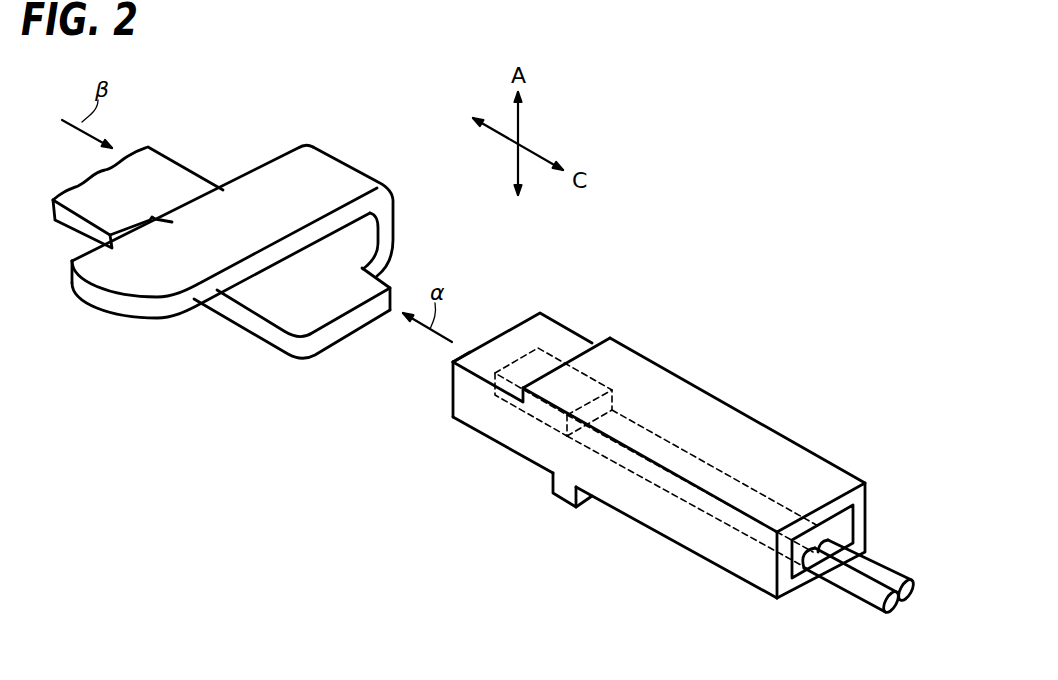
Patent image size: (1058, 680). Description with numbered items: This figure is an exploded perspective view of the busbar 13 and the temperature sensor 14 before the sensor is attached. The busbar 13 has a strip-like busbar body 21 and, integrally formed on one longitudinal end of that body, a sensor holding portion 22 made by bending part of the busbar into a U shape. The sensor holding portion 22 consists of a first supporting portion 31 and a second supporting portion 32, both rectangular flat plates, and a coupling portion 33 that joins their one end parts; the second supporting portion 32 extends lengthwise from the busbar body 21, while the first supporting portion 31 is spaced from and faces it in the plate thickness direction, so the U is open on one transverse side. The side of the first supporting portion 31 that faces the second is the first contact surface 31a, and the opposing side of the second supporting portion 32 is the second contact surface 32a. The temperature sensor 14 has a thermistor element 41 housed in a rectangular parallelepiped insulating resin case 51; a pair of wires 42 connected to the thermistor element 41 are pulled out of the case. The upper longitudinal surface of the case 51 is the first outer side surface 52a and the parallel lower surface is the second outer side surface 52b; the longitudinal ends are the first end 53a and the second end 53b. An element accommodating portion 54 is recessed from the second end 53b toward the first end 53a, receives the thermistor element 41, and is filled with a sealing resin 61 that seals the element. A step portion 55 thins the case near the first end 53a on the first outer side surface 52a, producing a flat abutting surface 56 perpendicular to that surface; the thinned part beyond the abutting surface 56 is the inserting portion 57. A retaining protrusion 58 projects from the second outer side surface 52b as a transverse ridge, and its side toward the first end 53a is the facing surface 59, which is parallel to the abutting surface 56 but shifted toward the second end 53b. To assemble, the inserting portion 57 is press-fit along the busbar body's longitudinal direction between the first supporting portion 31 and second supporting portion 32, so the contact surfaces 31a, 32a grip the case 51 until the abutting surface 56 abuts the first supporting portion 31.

The busbar 13 is at (66, 234).
The temperature sensor 14 is at (650, 460).
The busbar body 21 is at (162, 168).
The sensor holding portion 22 is at (244, 250).
The first supporting portion 31 is at (224, 218).
The first contact surface 31a is at (290, 258).
The second supporting portion 32 is at (276, 330).
The second contact surface 32a is at (243, 297).
The coupling portion 33 is at (391, 229).
The thermistor element 41 is at (593, 371).
The wires 42 is at (875, 571).
The case 51 is at (720, 395).
The first outer side surface 52a is at (683, 390).
The second outer side surface 52b is at (722, 572).
The first end 53a is at (450, 396).
The second end 53b is at (788, 585).
The element accommodating portion 54 is at (857, 519).
The step portion 55 is at (520, 342).
The abutting surface 56 is at (597, 338).
The inserting portion 57 is at (462, 352).
The retaining protrusion 58 is at (565, 497).
The facing surface 59 is at (552, 482).
The sealing resin 61 is at (853, 525).